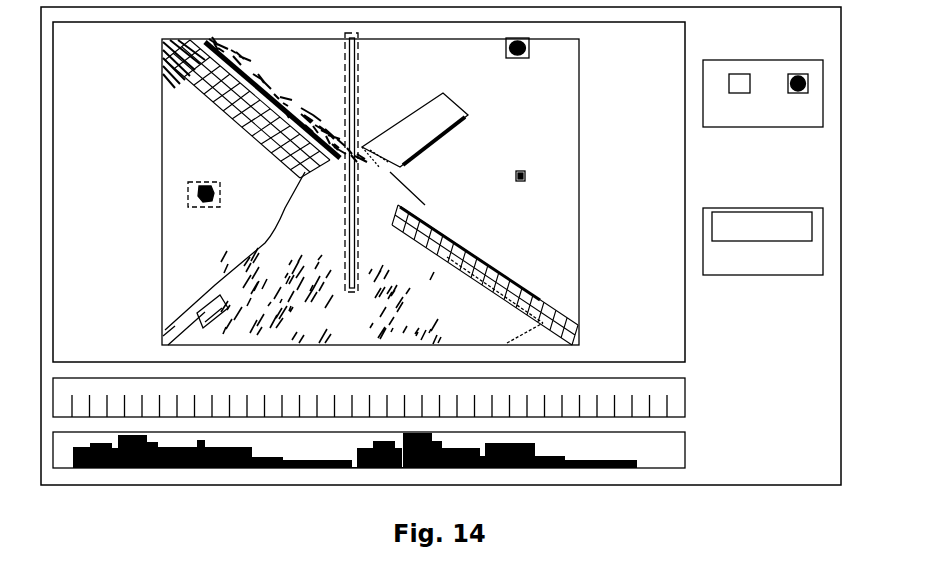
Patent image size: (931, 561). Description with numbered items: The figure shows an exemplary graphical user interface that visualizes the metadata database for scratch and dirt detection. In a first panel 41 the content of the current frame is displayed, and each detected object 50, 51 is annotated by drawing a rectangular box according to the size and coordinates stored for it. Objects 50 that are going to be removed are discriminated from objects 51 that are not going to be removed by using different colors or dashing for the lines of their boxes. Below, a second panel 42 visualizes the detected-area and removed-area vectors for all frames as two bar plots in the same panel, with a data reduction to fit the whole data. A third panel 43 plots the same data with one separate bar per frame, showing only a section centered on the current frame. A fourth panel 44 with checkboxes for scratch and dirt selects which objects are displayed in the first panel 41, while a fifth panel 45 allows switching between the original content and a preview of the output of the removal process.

The first panel 41 is at (688, 337).
The second panel 42 is at (688, 450).
The third panel 43 is at (688, 399).
The fourth panel 44 is at (765, 58).
The fifth panel 45 is at (750, 203).
The object to be removed 50 is at (518, 60).
The object not to be removed 51 is at (360, 92).